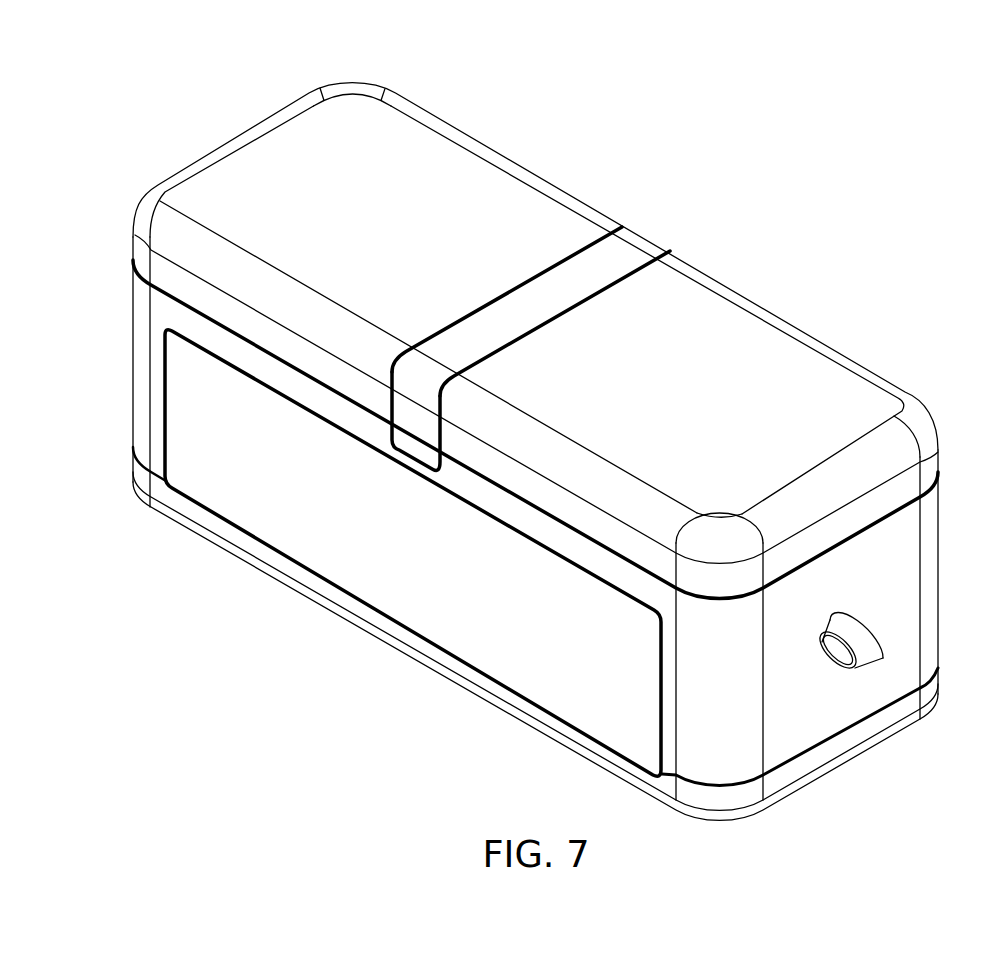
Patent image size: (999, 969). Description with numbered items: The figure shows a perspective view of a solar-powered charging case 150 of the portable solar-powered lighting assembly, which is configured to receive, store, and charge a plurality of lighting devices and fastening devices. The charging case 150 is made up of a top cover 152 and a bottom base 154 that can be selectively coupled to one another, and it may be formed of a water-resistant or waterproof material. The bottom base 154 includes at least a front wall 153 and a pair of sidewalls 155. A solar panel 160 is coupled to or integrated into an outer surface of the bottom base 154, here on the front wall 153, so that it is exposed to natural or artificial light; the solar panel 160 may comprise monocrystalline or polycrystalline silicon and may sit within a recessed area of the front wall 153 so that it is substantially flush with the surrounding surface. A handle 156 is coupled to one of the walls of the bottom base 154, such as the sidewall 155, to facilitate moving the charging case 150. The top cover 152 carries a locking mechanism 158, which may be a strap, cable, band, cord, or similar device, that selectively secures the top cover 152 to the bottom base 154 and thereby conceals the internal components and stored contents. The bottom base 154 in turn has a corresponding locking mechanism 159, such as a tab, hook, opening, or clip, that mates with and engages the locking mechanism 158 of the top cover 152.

The solar-powered charging case 150 is at (517, 434).
The top cover 152 is at (535, 306).
The front wall 153 is at (133, 414).
The bottom base 154 is at (486, 535).
The sidewall 155 is at (937, 533).
The handle 156 is at (870, 617).
The locking mechanism 158 is at (533, 277).
The corresponding locking mechanism 159 is at (422, 464).
The solar panel 160 is at (458, 553).